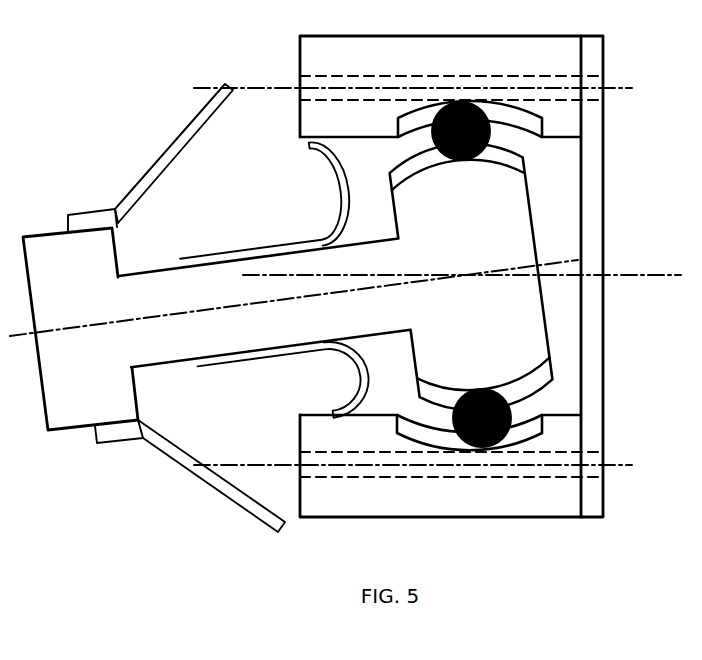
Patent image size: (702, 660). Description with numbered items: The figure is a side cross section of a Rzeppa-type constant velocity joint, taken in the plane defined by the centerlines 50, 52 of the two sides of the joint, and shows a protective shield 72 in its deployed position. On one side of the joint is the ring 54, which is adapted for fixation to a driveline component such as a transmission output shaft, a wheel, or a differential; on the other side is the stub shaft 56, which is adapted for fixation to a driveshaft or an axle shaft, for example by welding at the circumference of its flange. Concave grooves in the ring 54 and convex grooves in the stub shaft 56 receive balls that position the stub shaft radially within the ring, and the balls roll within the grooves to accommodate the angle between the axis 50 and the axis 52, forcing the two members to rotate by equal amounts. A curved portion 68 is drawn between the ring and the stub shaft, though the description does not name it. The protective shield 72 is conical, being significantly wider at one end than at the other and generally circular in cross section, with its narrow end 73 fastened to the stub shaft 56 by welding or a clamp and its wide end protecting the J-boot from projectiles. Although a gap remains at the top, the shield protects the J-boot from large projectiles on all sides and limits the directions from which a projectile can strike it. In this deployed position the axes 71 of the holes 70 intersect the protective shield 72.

The centerline 50 is at (633, 275).
The centerline 52 is at (92, 327).
The ring 54 is at (300, 55).
The stub shaft 56 is at (172, 365).
The curved flexure 68 is at (333, 208).
The hole 70 is at (484, 75).
The axis 71 is at (272, 90).
The protective shield 72 is at (160, 158).
The narrow end 73 is at (125, 440).